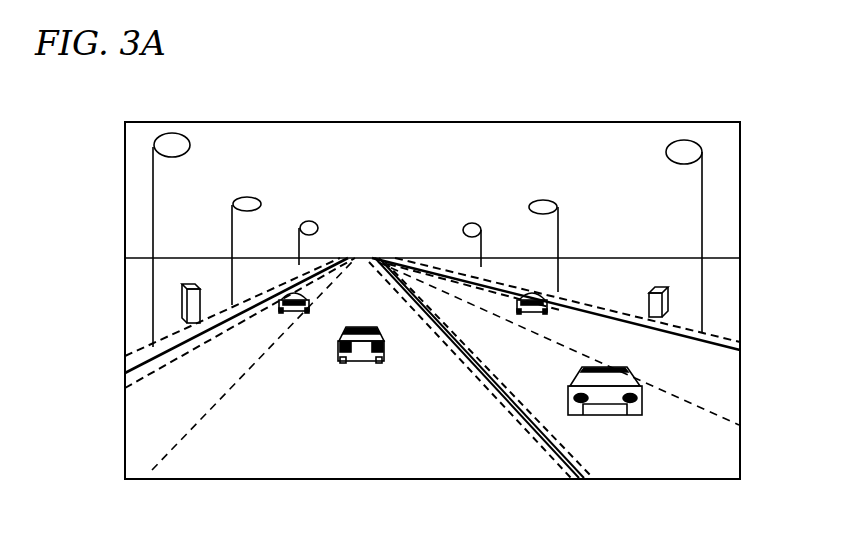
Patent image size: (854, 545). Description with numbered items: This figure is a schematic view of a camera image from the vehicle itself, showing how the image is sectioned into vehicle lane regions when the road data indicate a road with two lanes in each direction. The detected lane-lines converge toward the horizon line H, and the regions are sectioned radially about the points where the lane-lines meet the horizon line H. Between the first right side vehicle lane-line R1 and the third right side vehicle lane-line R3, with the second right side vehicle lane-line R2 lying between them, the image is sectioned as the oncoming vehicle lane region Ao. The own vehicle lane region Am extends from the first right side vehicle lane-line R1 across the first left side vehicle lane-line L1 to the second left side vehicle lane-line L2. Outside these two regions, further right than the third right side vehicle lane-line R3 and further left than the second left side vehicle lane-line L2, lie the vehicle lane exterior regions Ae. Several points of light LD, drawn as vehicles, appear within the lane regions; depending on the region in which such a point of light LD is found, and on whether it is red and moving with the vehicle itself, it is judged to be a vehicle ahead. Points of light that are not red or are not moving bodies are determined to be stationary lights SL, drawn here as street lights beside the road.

The horizon line H is at (575, 258).
The stationary light SL is at (192, 297).
The point of light LD is at (285, 313).
The vehicle lane exterior region Ae is at (145, 313).
The first left side vehicle lane-line L1 is at (190, 455).
The second left side vehicle lane-line L2 is at (147, 366).
The own vehicle lane region Am is at (346, 463).
The first right side vehicle lane-line R1 is at (567, 470).
The second right side vehicle lane-line R2 is at (718, 418).
The third right side vehicle lane-line R3 is at (740, 352).
The oncoming vehicle lane region Ao is at (693, 463).